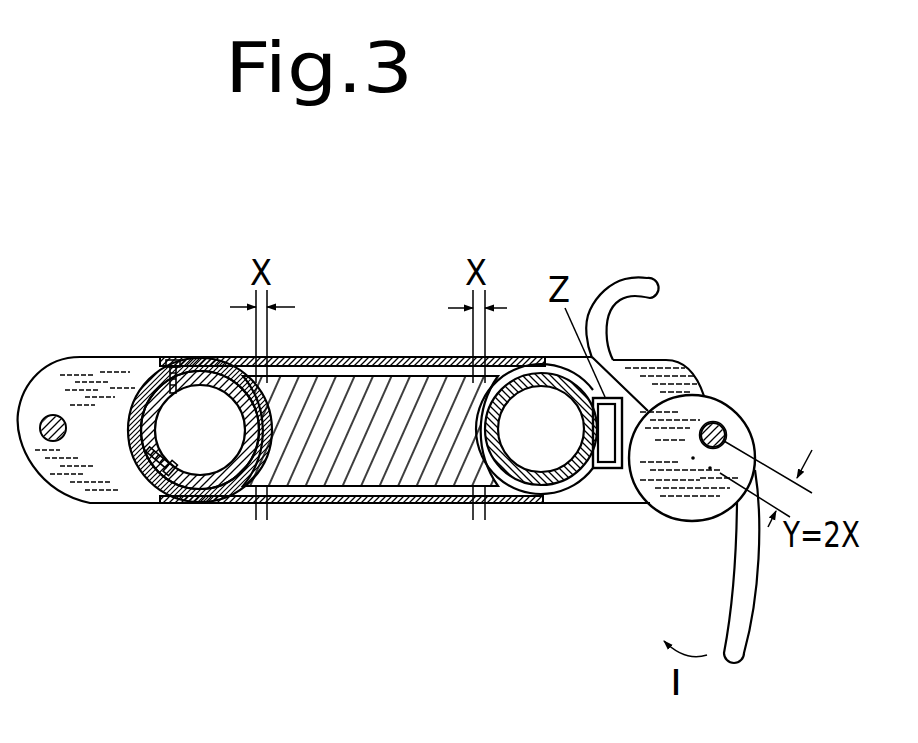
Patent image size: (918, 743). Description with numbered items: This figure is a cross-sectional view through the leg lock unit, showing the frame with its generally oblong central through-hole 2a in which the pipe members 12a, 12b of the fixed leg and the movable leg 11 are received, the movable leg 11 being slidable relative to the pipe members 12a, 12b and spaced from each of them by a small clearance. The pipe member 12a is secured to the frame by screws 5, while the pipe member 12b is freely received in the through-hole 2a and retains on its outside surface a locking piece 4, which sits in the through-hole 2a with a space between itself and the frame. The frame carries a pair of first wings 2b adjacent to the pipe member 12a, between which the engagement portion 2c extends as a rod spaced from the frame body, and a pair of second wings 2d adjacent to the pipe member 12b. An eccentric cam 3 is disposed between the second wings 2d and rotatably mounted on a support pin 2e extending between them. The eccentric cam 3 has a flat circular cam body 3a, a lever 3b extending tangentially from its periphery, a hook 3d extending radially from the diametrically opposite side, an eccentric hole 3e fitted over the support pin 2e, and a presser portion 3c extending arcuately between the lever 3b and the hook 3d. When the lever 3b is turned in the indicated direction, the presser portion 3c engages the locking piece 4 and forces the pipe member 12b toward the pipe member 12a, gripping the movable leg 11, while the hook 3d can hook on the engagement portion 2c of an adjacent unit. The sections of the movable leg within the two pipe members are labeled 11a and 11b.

The central through-hole 2a is at (394, 372).
The first wings 2b is at (103, 503).
The engagement portion 2c is at (50, 442).
The second wings 2d is at (622, 490).
The support pin 2e is at (726, 434).
The eccentric cam 3 is at (707, 384).
The cam body 3a is at (722, 427).
The lever 3b is at (738, 637).
The presser portion 3c is at (668, 517).
The hook 3d is at (636, 283).
The hole 3e is at (698, 395).
The locking piece 4 is at (605, 468).
The screws 5 is at (170, 359).
The movable leg 11 is at (397, 480).
The tube end portion 11a is at (255, 490).
The tube end portion 11b is at (483, 488).
The pipe member 12a is at (228, 500).
The pipe member 12b is at (532, 484).